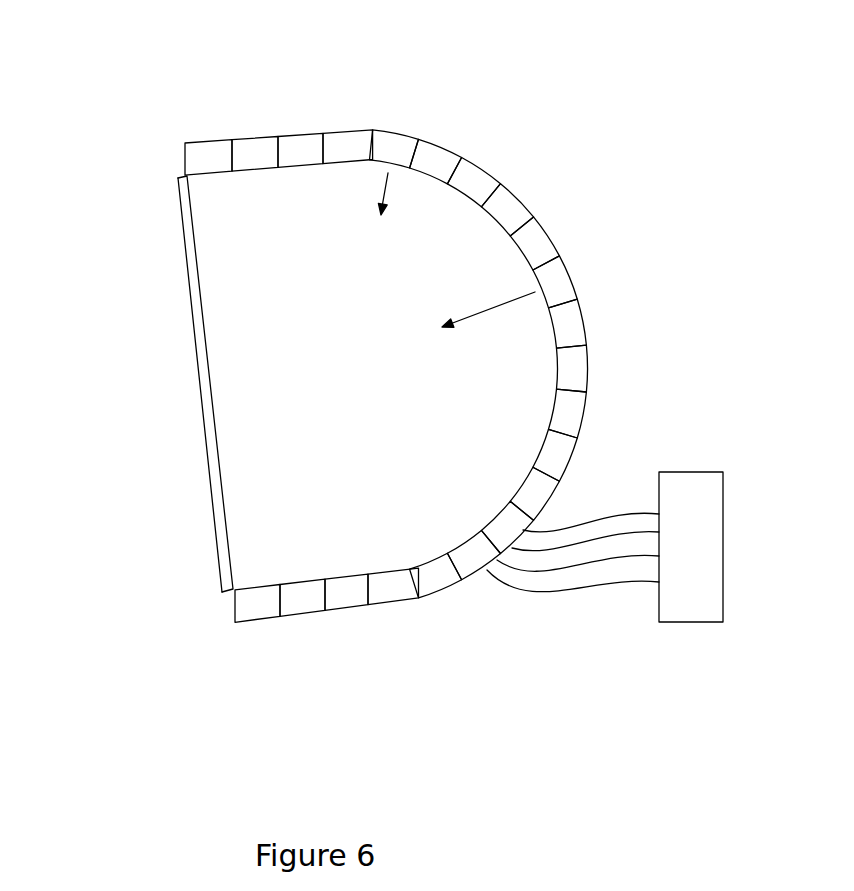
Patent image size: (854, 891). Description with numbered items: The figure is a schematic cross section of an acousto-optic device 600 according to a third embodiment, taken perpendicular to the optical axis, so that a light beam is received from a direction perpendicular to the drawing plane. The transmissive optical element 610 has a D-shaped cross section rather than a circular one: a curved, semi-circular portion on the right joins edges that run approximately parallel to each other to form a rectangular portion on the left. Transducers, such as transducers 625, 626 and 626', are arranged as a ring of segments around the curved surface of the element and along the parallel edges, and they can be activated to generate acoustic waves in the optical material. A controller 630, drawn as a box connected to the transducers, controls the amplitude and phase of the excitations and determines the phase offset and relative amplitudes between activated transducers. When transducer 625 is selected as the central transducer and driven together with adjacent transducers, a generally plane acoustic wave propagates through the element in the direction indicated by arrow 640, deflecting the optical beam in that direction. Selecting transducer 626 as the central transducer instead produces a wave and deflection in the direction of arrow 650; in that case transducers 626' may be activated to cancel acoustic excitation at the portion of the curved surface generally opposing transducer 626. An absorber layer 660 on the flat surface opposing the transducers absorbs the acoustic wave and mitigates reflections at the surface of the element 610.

The acousto-optic device 600 is at (137, 213).
The transmissive optical element 610 is at (247, 397).
The transducer 625 is at (552, 281).
The transducer 626 is at (420, 94).
The transducers 626' is at (427, 644).
The controller 630 is at (711, 559).
The arrow 640 is at (472, 323).
The arrow 650 is at (395, 195).
The absorber layer 660 is at (215, 503).